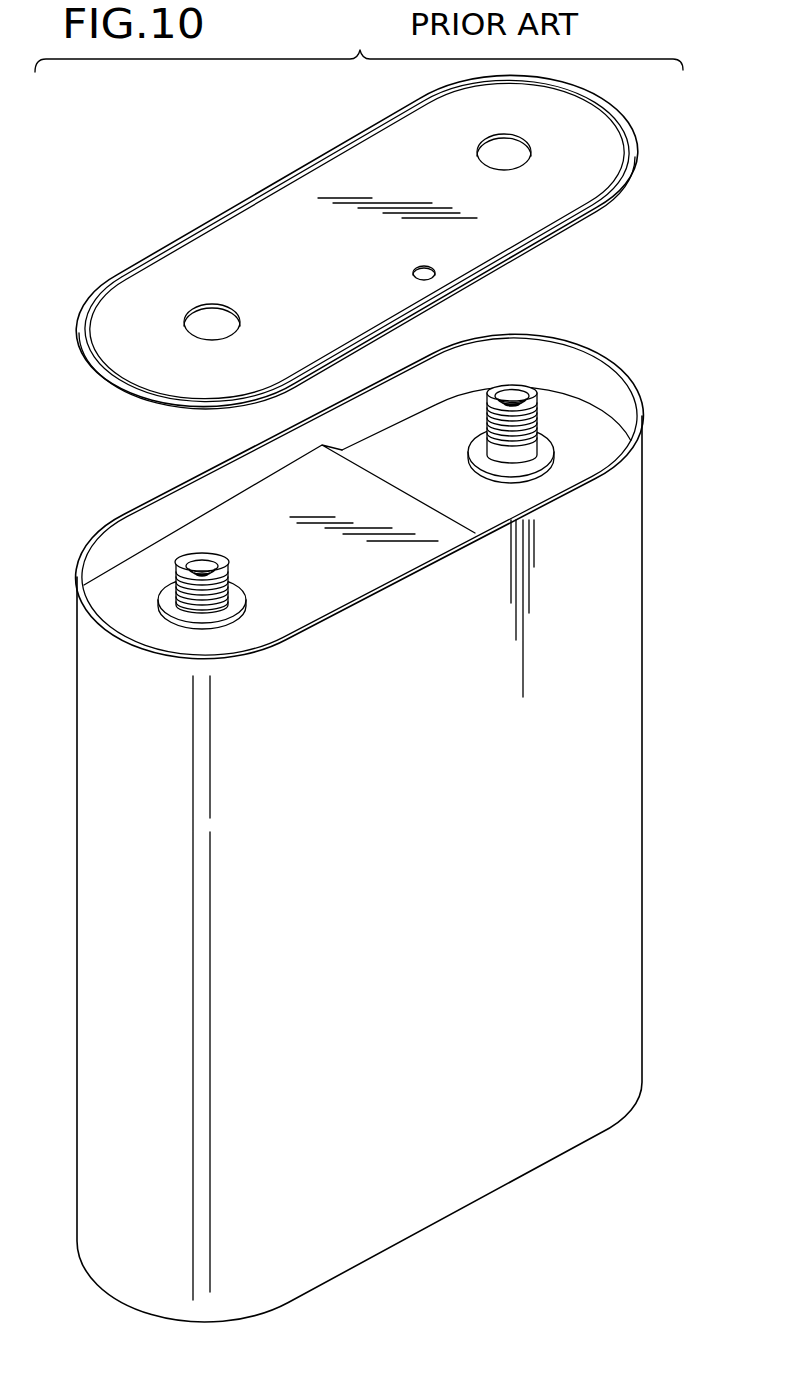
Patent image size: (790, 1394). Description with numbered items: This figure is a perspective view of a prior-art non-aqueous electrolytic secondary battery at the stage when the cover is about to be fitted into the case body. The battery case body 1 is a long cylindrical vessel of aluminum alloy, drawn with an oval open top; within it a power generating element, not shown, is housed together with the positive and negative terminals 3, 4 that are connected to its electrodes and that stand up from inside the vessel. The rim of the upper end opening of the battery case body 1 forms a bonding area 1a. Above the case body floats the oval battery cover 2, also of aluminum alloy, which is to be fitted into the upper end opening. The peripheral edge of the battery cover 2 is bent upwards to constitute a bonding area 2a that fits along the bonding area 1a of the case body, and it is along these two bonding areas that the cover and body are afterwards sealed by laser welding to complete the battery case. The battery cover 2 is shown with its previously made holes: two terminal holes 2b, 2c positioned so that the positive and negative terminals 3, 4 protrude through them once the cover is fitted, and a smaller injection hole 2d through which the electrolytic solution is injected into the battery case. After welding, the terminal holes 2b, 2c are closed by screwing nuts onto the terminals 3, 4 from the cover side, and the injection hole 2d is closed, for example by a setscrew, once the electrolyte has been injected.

The battery case body 1 is at (641, 713).
The bonding area of the upper end opening 1a is at (630, 382).
The battery cover 2 is at (260, 174).
The bonding area of the battery cover 2a is at (619, 115).
The terminal hole 2b is at (483, 143).
The terminal hole 2c is at (224, 304).
The injection hole 2d is at (415, 272).
The positive terminal 3 is at (489, 400).
The negative terminal 4 is at (221, 564).